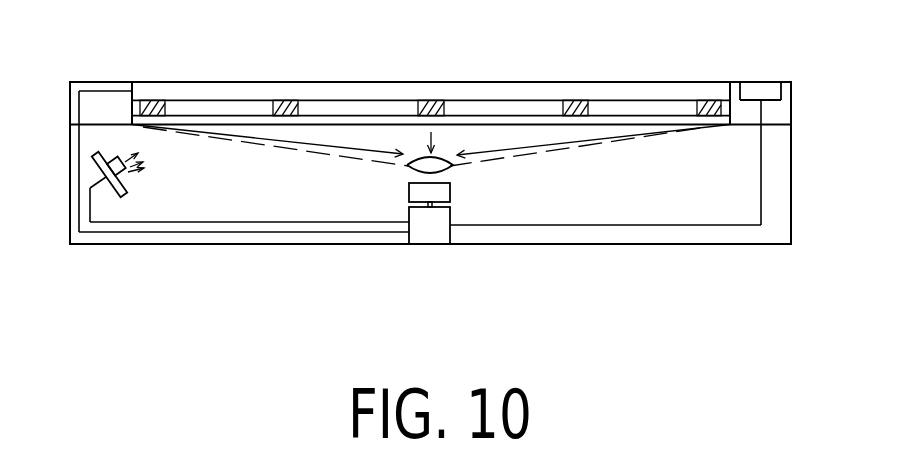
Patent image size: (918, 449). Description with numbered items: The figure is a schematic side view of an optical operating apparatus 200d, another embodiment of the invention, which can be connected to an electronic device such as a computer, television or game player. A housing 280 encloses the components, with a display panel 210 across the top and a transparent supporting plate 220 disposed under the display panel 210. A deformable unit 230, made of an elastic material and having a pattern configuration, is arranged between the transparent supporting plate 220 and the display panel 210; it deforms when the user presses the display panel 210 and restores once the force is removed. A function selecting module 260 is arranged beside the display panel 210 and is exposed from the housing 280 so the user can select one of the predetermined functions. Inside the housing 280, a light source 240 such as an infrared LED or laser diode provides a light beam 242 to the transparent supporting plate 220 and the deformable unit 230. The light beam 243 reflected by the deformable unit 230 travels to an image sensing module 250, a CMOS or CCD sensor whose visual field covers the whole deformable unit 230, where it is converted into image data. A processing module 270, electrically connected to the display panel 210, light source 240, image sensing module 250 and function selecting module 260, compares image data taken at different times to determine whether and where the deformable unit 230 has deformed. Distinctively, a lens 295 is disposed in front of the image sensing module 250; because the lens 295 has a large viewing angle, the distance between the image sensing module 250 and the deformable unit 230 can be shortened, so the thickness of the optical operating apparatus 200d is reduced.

The optical operating apparatus 200d is at (723, 315).
The display panel 210 is at (668, 89).
The transparent supporting plate 220 is at (537, 120).
The deformable unit 230 is at (292, 106).
The light source 240 is at (97, 157).
The light beam 242 is at (130, 153).
The reflected light beam 243 is at (497, 146).
The image sensing module 250 is at (410, 193).
The function selecting module 260 is at (768, 90).
The processing module 270 is at (439, 238).
The housing 280 is at (792, 208).
The lens 295 is at (445, 166).